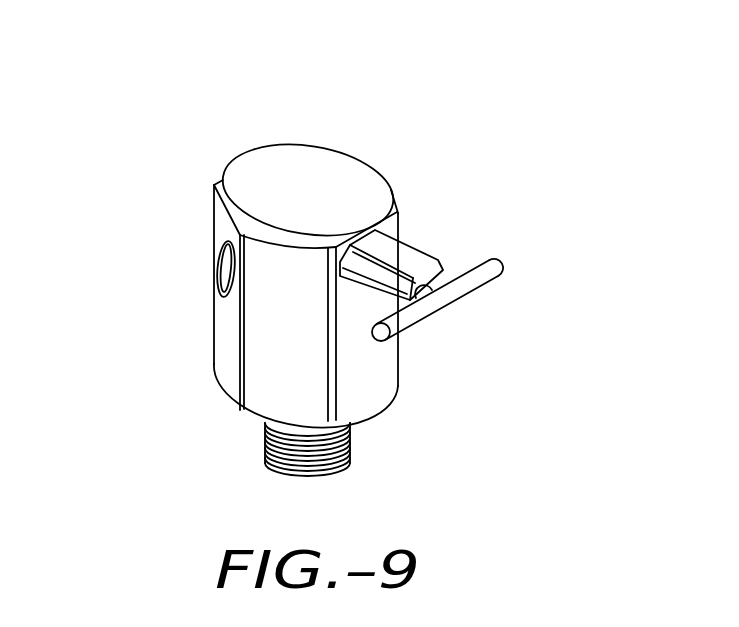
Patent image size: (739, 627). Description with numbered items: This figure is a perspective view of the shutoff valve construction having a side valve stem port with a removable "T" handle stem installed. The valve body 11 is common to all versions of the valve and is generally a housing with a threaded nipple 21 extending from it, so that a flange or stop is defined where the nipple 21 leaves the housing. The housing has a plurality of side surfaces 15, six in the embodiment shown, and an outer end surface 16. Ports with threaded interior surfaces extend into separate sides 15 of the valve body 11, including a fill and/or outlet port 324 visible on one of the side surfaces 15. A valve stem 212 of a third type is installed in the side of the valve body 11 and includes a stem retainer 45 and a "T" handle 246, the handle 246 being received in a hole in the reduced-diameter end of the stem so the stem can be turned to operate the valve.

The valve body 11 is at (190, 290).
The side surfaces 15 is at (230, 312).
The outer end surface 16 is at (313, 175).
The threaded nipple 21 is at (265, 439).
The stem retainer 45 is at (402, 262).
The valve stem 212 is at (507, 293).
The T handle 246 is at (500, 306).
The fill and/or outlet port 324 is at (217, 257).